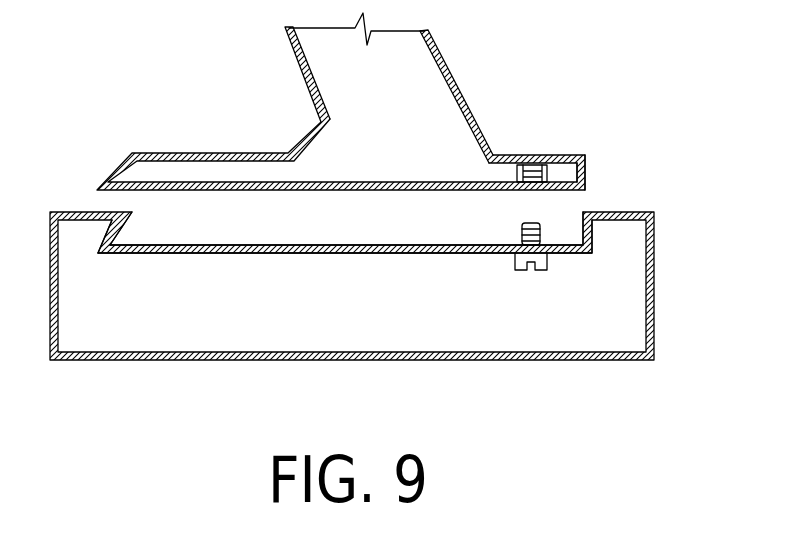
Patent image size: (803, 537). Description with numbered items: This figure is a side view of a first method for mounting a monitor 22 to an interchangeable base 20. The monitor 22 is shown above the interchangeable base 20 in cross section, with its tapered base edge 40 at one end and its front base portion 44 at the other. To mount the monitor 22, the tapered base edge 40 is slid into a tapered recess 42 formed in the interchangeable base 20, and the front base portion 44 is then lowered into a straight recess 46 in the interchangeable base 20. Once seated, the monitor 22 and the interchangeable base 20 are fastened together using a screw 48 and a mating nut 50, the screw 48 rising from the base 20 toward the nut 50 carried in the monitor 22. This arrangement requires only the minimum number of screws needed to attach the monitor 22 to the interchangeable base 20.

The interchangeable base 20 is at (653, 282).
The monitor 22 is at (460, 87).
The tapered base edge 40 is at (115, 175).
The tapered recess 42 is at (120, 228).
The front base portion 44 is at (587, 168).
The straight recess 46 is at (563, 244).
The screw 48 is at (518, 272).
The mating nut 50 is at (519, 164).